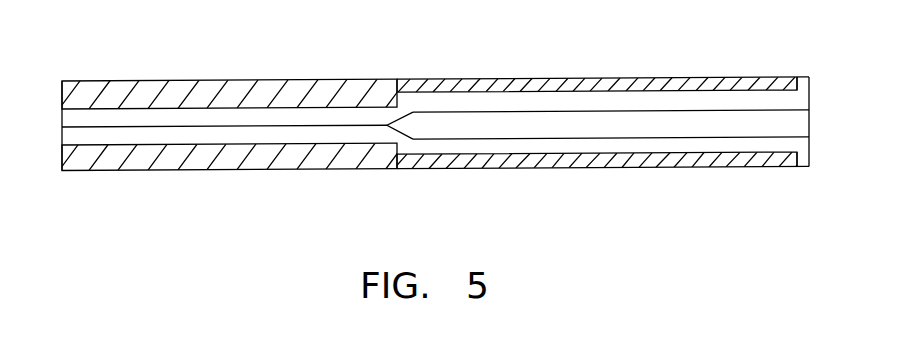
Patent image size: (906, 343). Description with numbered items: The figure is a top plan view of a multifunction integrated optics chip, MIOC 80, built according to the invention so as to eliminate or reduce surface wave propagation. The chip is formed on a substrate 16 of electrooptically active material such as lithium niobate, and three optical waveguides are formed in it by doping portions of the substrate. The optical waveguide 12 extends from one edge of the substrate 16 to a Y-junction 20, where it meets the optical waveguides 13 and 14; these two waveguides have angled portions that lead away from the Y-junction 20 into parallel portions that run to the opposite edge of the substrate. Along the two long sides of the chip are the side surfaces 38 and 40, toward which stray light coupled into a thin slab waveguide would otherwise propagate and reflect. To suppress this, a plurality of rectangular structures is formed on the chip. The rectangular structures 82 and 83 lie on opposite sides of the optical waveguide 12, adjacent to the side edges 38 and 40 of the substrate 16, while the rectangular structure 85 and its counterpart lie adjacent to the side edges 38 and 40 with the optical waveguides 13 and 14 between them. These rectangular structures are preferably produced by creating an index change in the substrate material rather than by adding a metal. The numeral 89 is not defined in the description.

The optical waveguide 12 is at (152, 120).
The optical waveguide 13 is at (596, 140).
The optical waveguide 14 is at (600, 110).
The substrate 16 is at (757, 160).
The Y-junction 20 is at (378, 138).
The side surface 38 is at (478, 170).
The side surface 40 is at (698, 78).
The MIOC 80 is at (255, 205).
The rectangular structure 82 is at (252, 81).
The rectangular structure 83 is at (147, 171).
The rectangular structure 85 is at (668, 168).
The distal tube wall 89 is at (482, 79).